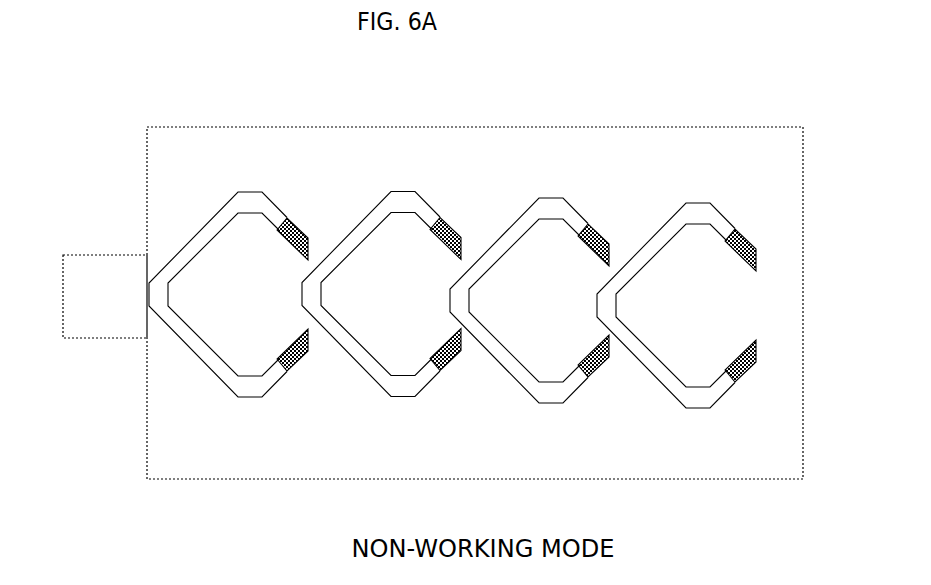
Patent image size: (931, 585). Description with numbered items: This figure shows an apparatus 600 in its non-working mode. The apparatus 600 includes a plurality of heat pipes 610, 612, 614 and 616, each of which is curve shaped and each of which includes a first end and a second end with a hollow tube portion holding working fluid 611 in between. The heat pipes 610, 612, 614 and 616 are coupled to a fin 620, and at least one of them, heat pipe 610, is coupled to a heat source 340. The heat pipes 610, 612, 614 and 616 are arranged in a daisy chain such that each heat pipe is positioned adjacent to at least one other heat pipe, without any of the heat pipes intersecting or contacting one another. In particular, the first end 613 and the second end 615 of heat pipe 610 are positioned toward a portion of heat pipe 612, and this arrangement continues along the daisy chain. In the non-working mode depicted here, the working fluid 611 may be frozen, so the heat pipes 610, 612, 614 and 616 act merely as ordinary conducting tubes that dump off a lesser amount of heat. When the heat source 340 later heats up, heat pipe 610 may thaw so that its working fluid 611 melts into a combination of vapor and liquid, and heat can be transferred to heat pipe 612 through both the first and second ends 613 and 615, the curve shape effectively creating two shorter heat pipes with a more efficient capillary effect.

The apparatus 600 is at (732, 33).
The heat pipe 610 is at (307, 235).
The working fluid 611 is at (445, 365).
The heat pipe 612 is at (409, 289).
The first end 613 is at (301, 200).
The heat pipe 614 is at (553, 197).
The second end 615 is at (301, 380).
The heat pipe 616 is at (705, 200).
The fin 620 is at (758, 127).
The heat source 340 is at (108, 338).